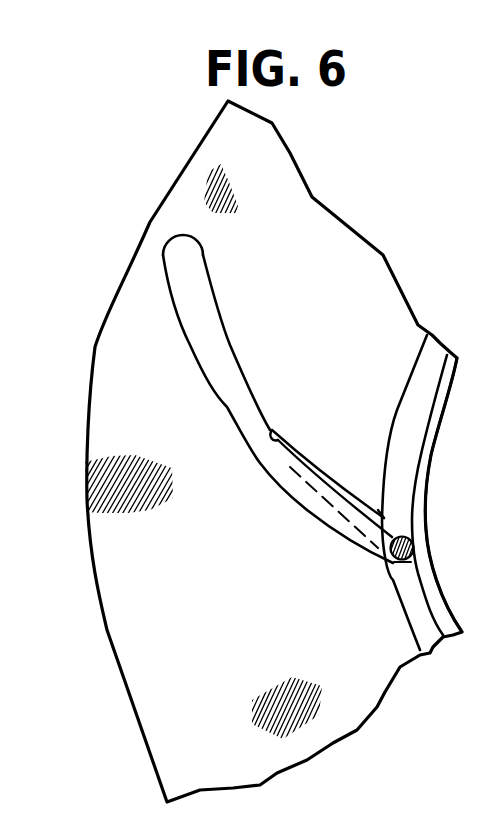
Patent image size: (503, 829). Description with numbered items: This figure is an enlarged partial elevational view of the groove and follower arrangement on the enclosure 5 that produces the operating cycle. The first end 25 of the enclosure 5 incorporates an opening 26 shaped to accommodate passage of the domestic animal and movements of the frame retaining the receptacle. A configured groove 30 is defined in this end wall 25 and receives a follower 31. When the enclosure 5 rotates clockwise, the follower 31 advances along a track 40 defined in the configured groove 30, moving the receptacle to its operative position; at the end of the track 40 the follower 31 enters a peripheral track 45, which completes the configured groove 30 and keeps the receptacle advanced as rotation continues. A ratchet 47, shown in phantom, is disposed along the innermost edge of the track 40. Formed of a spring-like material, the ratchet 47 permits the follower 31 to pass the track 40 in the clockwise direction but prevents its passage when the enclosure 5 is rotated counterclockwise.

The enclosure 5 is at (188, 600).
The first end 25 is at (96, 488).
The opening 26 is at (428, 468).
The configured groove 30 is at (375, 505).
The follower 31 is at (415, 548).
The track 40 is at (233, 430).
The peripheral track 45 is at (398, 397).
The ratchet 47 is at (294, 452).